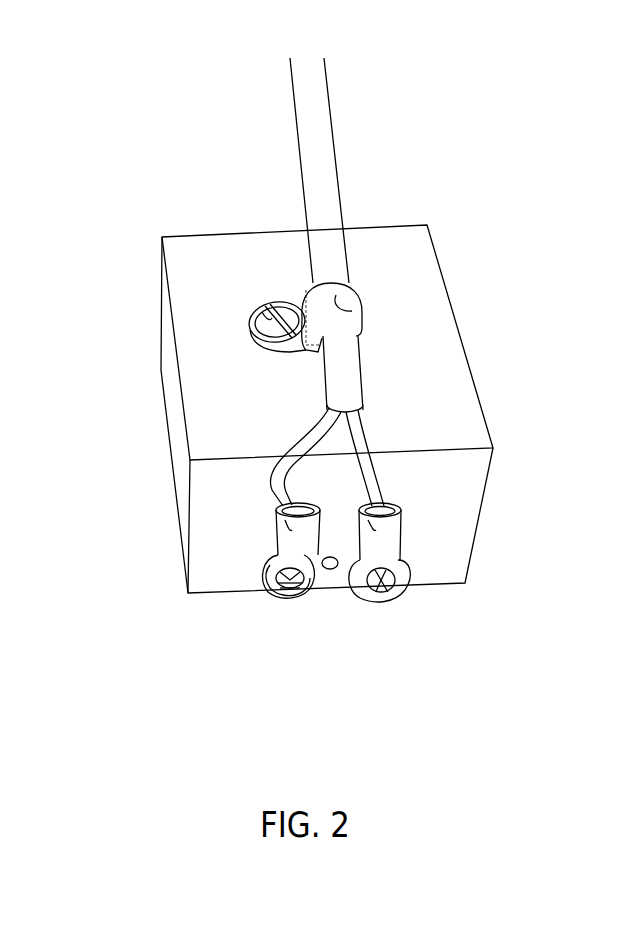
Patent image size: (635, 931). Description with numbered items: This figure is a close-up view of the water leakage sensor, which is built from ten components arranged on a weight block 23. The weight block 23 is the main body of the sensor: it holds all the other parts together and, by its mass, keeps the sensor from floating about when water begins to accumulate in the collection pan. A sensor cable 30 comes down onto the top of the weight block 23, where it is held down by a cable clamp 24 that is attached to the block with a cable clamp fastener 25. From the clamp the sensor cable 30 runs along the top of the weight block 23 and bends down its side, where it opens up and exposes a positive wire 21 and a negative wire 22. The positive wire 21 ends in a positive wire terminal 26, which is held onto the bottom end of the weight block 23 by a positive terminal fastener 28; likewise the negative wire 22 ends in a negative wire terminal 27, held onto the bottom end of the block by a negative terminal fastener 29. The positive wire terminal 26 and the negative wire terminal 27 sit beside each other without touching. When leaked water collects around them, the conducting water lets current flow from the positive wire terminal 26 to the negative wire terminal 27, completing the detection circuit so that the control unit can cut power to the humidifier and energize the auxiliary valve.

The positive wire 21 is at (285, 467).
The negative wire 22 is at (378, 468).
The weight block 23 is at (190, 270).
The cable clamp 24 is at (355, 310).
The cable clamp fastener 25 is at (252, 310).
The positive wire terminal 26 is at (268, 512).
The negative wire terminal 27 is at (385, 513).
The positive terminal fastener 28 is at (283, 595).
The negative terminal fastener 29 is at (385, 590).
The sensor cable 30 is at (320, 155).